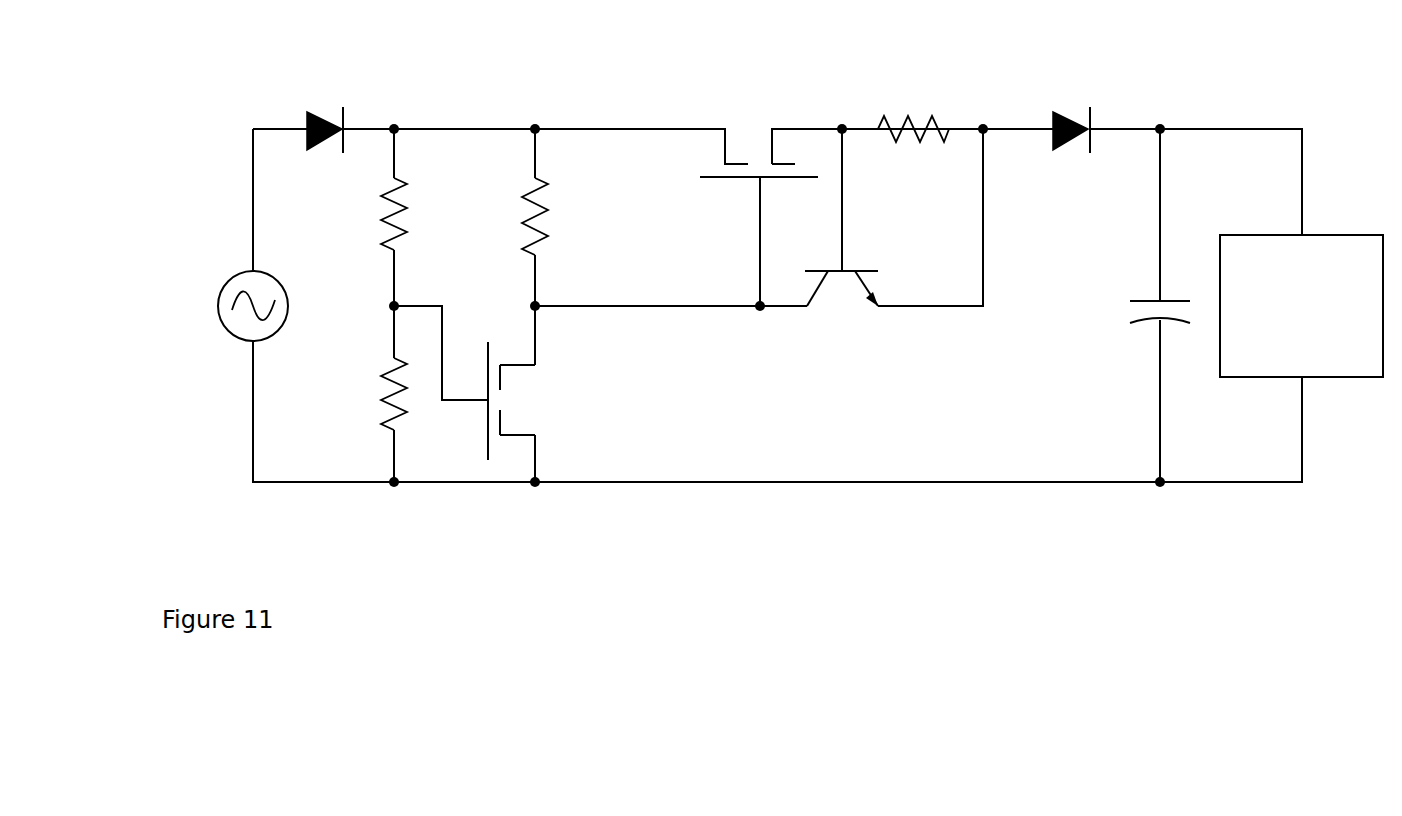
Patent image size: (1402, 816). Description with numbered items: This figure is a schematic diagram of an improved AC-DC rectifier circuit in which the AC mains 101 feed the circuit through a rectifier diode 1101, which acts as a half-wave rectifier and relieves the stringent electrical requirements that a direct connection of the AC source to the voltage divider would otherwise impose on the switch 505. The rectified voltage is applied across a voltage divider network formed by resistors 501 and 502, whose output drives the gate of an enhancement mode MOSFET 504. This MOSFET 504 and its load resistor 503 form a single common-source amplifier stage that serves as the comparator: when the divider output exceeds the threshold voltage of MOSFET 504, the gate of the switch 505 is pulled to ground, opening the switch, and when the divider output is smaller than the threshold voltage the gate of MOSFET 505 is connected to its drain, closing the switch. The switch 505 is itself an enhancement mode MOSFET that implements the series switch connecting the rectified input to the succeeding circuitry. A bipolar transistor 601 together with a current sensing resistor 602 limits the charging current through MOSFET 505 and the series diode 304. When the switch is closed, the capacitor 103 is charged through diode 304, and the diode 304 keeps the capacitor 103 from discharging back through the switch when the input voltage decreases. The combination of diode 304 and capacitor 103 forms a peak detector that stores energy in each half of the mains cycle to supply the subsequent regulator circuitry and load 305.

The rectifier diode 1101 is at (313, 107).
The AC mains 101 is at (218, 295).
The resistor 501 is at (407, 223).
The resistor 502 is at (407, 403).
The load resistor 503 is at (548, 223).
The enhancement mode MOSFET 504 is at (542, 398).
The enhancement mode MOSFET 505 is at (760, 128).
The bipolar transistor 601 is at (842, 305).
The current sensing resistor 602 is at (905, 112).
The series diode 304 is at (1042, 112).
The capacitor 103 is at (1125, 313).
The regulator circuitry and load 305 is at (1260, 230).